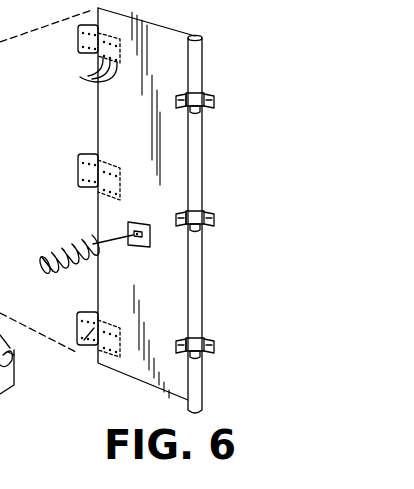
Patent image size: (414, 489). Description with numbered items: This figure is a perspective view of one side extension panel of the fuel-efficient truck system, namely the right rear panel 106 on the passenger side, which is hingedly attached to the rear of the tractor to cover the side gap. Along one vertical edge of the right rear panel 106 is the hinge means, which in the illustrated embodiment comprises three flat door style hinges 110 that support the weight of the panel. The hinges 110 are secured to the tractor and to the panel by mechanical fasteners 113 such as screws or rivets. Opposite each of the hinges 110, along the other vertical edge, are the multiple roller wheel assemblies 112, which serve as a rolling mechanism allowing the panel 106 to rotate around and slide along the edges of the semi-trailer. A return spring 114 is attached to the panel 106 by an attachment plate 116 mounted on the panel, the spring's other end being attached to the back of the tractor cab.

The right rear panel 106 is at (214, 352).
The door style hinges 110 is at (78, 165).
The multiple roller wheel assembly 112 is at (212, 100).
The mechanical fasteners 113 is at (96, 74).
The return spring 114 is at (66, 250).
The attachment plate 116 is at (130, 248).